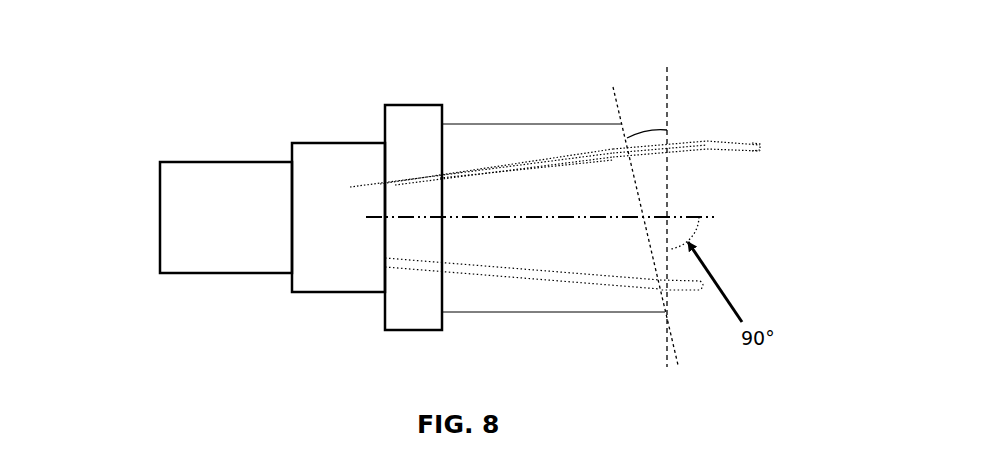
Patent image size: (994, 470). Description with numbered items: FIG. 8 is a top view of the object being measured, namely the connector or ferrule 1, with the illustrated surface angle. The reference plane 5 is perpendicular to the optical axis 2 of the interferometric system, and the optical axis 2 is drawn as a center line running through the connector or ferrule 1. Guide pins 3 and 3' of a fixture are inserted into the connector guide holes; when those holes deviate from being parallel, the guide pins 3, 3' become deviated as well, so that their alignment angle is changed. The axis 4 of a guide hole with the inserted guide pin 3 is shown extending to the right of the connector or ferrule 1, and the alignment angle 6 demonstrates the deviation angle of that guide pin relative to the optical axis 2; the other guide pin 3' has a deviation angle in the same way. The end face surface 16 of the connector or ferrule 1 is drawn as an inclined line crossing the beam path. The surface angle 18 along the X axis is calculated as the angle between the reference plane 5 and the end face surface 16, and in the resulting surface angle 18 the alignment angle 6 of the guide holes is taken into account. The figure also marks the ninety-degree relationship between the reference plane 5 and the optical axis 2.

The connector or ferrule 1 is at (176, 126).
The optical axis 2 is at (703, 218).
The guide pin 3 is at (481, 123).
The guide pin 3' is at (544, 308).
The axis of guide hole 4 is at (727, 140).
The reference plane 5 is at (667, 130).
The alignment angle 6 is at (752, 147).
The end face surface 16 is at (615, 157).
The surface angle 18 is at (644, 128).